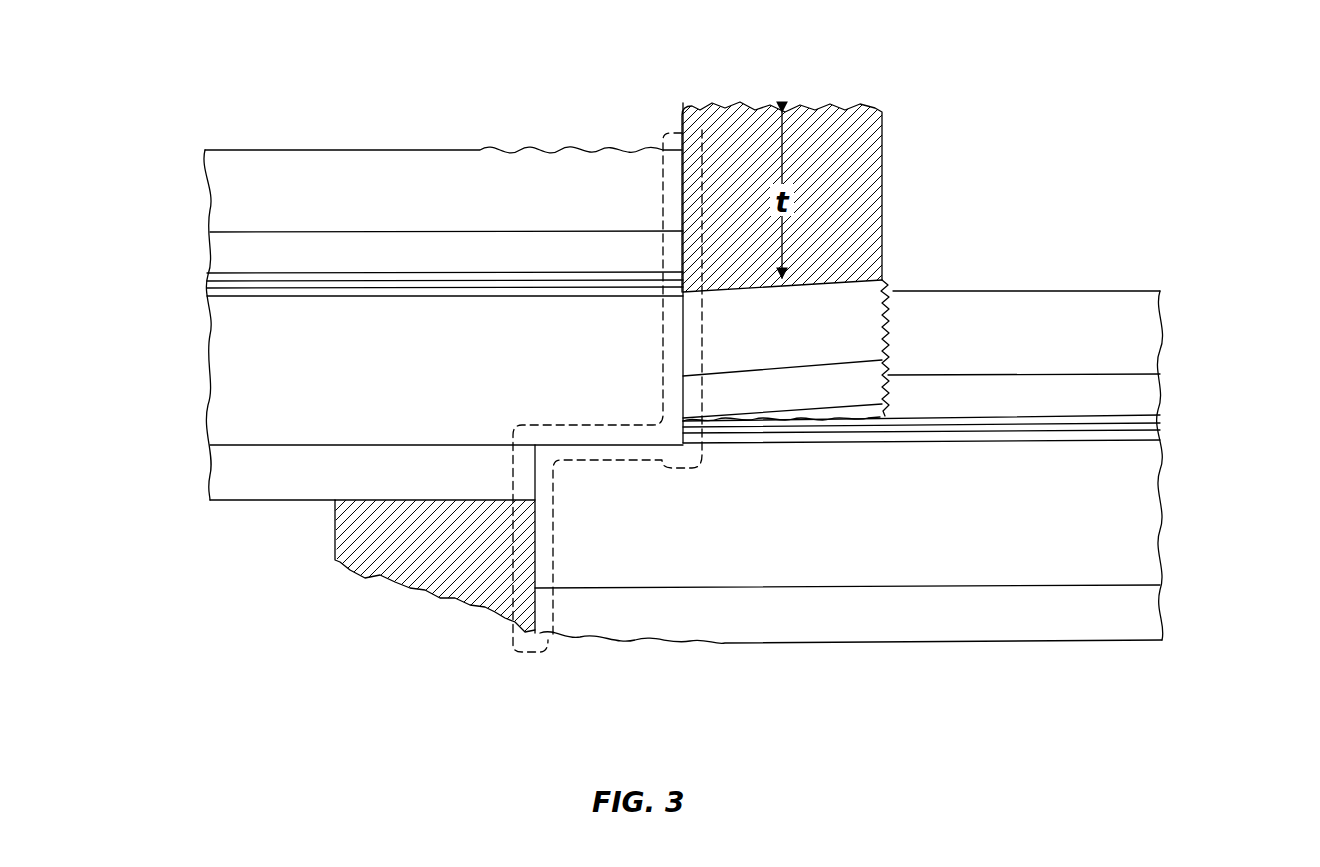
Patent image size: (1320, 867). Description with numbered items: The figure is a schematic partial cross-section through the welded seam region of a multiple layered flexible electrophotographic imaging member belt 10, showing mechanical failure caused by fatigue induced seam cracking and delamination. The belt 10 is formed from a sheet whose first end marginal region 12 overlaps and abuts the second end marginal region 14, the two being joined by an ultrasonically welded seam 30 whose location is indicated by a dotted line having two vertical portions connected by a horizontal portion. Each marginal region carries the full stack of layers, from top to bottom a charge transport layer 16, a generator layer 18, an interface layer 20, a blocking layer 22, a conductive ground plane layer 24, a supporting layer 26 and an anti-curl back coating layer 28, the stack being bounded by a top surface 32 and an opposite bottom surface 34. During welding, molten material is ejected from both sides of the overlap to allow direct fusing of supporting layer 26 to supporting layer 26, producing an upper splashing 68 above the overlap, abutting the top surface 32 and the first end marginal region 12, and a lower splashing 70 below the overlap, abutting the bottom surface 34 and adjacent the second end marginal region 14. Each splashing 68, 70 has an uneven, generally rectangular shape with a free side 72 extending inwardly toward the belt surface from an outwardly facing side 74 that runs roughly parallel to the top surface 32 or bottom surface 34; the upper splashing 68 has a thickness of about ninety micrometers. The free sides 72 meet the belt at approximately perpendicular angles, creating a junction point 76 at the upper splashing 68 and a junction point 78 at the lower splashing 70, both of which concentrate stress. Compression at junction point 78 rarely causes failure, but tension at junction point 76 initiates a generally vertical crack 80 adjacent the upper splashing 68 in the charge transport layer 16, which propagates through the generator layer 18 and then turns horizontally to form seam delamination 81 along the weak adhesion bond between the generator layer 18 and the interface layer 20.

The flexible electrophotographic imaging member belt 10 is at (1095, 158).
The first end marginal region 12 is at (594, 85).
The second end marginal region 14 is at (597, 663).
The charge transport layer 16 is at (218, 183).
The generator layer 18 is at (218, 242).
The interface layer 20 is at (205, 279).
The blocking layer 22 is at (205, 290).
The conductive ground plane layer 24 is at (205, 297).
The supporting layer 26 is at (220, 370).
The anti-curl back coating layer 28 is at (218, 463).
The seam 30 is at (513, 657).
The top surface 32 is at (330, 150).
The bottom surface 34 is at (238, 503).
The upper splashing 68 is at (902, 82).
The lower splashing 70 is at (393, 612).
The free side 72 is at (884, 146).
The outwardly facing side 74 is at (770, 104).
The junction point 76 is at (887, 283).
The junction point 78 is at (336, 510).
The crack 80 is at (888, 293).
The seam delamination 81 is at (873, 415).